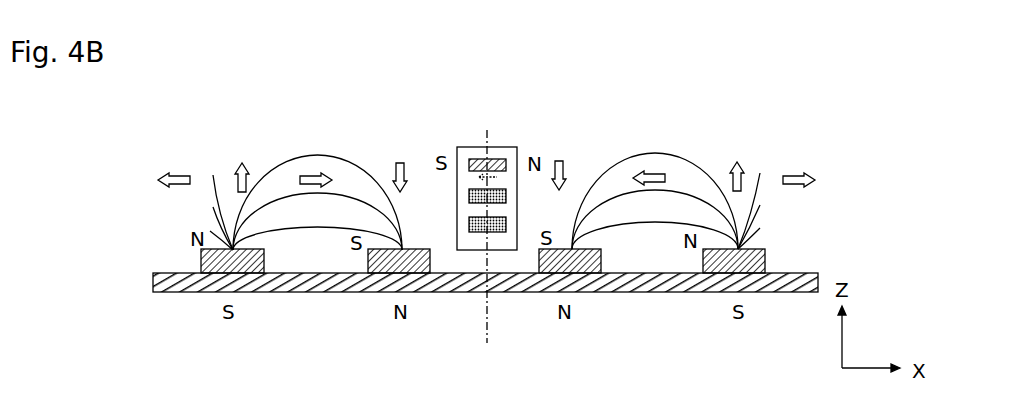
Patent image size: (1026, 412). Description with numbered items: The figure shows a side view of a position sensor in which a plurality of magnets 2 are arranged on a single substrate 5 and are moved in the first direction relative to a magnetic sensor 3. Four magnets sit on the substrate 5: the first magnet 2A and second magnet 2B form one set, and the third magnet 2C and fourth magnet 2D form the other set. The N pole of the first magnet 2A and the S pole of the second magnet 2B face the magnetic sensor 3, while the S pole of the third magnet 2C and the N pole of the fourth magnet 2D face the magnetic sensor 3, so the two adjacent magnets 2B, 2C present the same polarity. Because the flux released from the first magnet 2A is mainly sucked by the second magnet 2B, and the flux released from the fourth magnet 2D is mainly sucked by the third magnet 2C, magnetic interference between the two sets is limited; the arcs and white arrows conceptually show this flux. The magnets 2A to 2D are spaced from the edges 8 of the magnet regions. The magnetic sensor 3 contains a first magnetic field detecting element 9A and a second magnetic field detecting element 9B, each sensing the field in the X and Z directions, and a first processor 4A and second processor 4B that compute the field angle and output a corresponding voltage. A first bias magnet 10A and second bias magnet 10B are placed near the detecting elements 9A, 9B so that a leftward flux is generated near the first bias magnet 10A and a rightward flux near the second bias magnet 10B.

The magnets 2 is at (491, 302).
The first magnet 2A is at (244, 292).
The second magnet 2B is at (413, 292).
The third magnet 2C is at (585, 292).
The fourth magnet 2D is at (748, 292).
The magnetic sensor 3 is at (493, 161).
The first processor 4A is at (434, 155).
The second processor 4B is at (470, 223).
The substrate 5 is at (166, 273).
The edges 8 is at (487, 253).
The first magnetic field detecting element 9A is at (457, 159).
The second magnetic field detecting element 9B is at (470, 192).
The first bias magnet 10A is at (546, 135).
The second bias magnet 10B is at (506, 166).